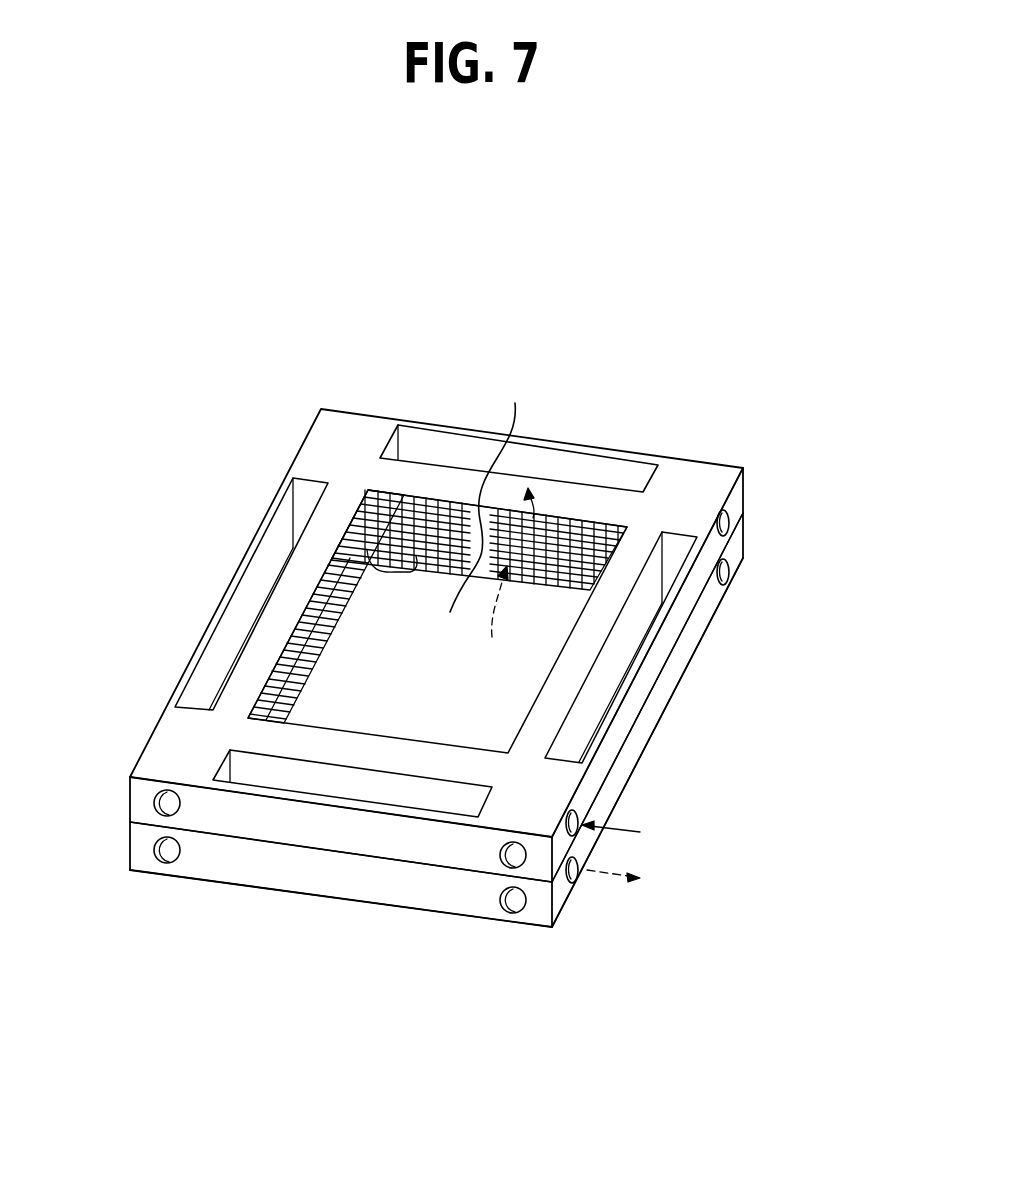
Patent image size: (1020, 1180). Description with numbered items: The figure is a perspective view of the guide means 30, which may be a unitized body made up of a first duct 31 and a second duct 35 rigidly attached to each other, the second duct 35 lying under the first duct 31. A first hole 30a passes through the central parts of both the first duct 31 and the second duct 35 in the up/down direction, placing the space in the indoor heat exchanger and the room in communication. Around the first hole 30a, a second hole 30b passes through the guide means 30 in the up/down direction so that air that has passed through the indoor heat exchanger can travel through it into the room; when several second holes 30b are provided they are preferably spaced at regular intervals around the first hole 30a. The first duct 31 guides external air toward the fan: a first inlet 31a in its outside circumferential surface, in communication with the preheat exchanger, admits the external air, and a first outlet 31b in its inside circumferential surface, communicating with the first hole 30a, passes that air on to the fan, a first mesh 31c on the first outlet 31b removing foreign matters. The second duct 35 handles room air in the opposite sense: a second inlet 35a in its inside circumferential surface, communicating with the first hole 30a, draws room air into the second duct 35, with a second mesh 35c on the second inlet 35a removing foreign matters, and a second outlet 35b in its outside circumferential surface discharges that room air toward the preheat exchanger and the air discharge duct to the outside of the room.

The guide means 30 is at (704, 298).
The first hole 30a is at (338, 706).
The second hole 30b is at (600, 470).
The first duct 31 is at (647, 672).
The first inlet 31a is at (727, 517).
The first outlet 31b is at (499, 501).
The first mesh 31c is at (408, 510).
The second duct 35 is at (642, 727).
The second inlet 35a is at (478, 525).
The second outlet 35b is at (728, 572).
The second mesh 35c is at (337, 548).